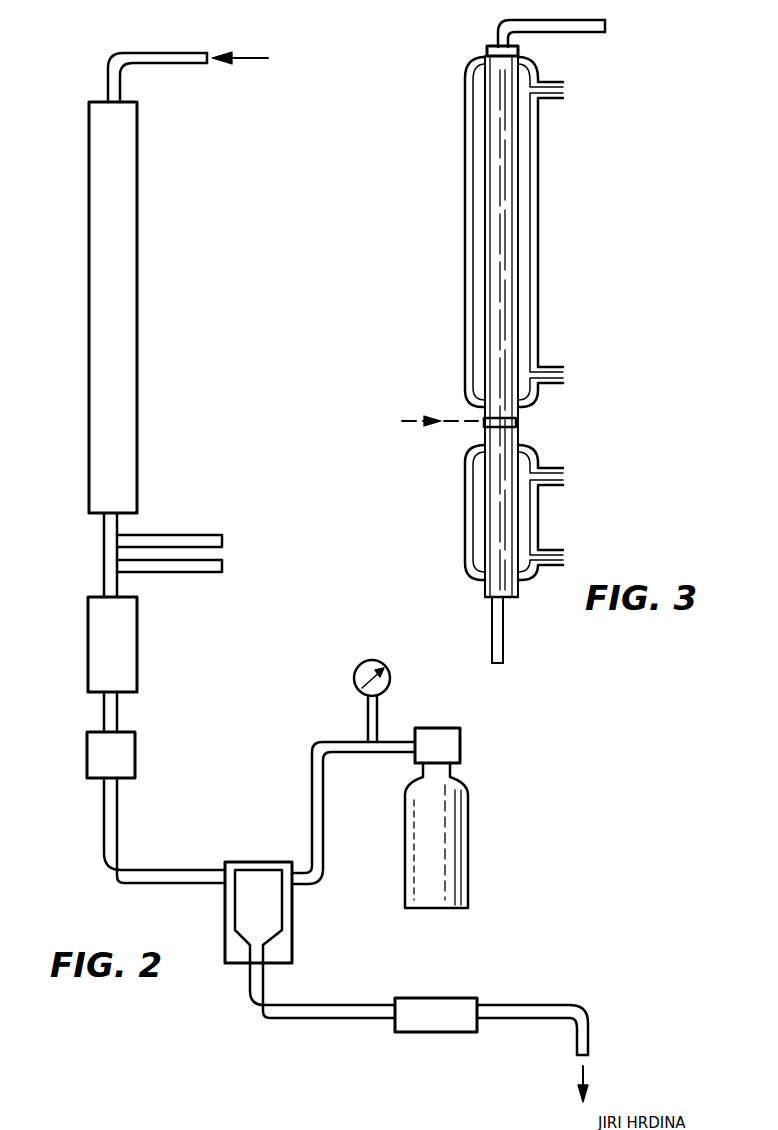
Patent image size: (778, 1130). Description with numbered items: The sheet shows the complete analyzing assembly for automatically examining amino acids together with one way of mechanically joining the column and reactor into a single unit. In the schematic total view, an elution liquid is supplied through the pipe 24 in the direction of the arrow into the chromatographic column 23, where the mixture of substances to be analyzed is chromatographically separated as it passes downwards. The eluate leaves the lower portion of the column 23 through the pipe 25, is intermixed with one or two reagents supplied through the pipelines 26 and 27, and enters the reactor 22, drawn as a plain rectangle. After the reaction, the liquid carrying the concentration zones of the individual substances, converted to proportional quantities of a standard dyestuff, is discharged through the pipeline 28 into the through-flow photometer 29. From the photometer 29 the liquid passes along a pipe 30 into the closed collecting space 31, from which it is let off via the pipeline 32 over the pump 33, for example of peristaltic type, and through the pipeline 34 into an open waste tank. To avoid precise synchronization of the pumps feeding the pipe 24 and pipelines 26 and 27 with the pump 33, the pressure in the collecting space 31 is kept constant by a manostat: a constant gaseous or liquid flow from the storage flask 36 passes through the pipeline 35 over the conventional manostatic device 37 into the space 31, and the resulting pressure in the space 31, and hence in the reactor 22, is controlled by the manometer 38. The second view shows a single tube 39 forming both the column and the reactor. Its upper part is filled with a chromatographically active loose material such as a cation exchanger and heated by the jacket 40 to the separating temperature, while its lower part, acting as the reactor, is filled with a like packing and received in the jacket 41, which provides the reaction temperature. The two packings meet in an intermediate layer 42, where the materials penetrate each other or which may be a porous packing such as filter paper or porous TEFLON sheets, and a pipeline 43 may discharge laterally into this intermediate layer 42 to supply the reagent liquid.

In FIG. 2, the reactor 22 is at (95, 633).
In FIG. 2, the chromatographic column 23 is at (115, 202).
In FIG. 2, the pipe 24 is at (188, 62).
In FIG. 3, the pipe 24 is at (582, 33).
In FIG. 2, the pipe 25 is at (102, 525).
In FIG. 2, the pipeline 26 is at (193, 538).
In FIG. 2, the pipeline 27 is at (200, 570).
In FIG. 2, the pipeline 28 is at (117, 713).
In FIG. 2, the through-flow photometer 29 is at (95, 753).
In FIG. 2, the pipe 30 is at (103, 803).
In FIG. 2, the closed collecting space 31 is at (243, 895).
In FIG. 2, the pipeline 32 is at (250, 988).
In FIG. 2, the pump 33 is at (430, 1006).
In FIG. 2, the pipeline 34 is at (590, 1030).
In FIG. 2, the pipeline 35 is at (320, 886).
In FIG. 2, the storage flask 36 is at (457, 855).
In FIG. 2, the manostatic device 37 is at (446, 735).
In FIG. 2, the manometer 38 is at (378, 710).
In FIG. 3, the tube 39 is at (487, 52).
In FIG. 3, the jacket 40 is at (538, 236).
In FIG. 3, the jacket 41 is at (537, 512).
In FIG. 3, the intermediate layer 42 is at (516, 423).
In FIG. 3, the pipeline 43 is at (426, 418).